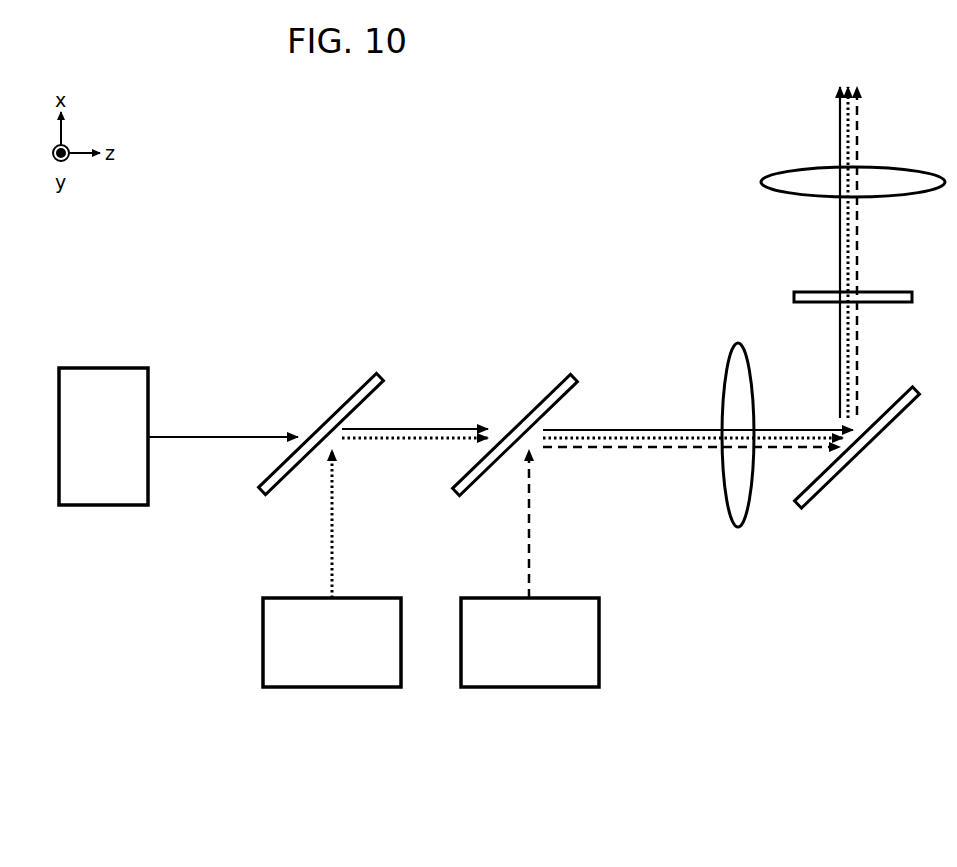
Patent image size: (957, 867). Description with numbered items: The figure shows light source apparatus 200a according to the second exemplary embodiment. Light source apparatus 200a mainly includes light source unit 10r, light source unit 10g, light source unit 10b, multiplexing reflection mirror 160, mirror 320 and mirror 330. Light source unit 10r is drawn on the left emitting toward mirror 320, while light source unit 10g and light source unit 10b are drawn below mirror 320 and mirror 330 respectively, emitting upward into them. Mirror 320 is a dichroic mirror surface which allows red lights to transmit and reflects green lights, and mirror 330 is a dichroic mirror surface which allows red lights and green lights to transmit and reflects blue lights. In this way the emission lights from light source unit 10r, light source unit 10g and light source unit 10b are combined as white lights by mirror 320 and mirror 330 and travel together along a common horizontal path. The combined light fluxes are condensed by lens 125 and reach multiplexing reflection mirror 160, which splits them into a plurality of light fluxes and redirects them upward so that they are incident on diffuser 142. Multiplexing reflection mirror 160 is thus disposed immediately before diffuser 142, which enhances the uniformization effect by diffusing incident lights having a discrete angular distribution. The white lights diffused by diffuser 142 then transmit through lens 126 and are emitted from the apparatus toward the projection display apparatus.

The light source apparatus 200a is at (508, 153).
The light source unit 10r is at (100, 507).
The light source unit 10g is at (328, 688).
The light source unit 10b is at (532, 688).
The mirror 320 is at (345, 410).
The mirror 330 is at (538, 400).
The multiplexing reflection mirror 160 is at (835, 472).
The lens 125 is at (740, 503).
The lens 126 is at (780, 178).
The diffuser 142 is at (795, 298).